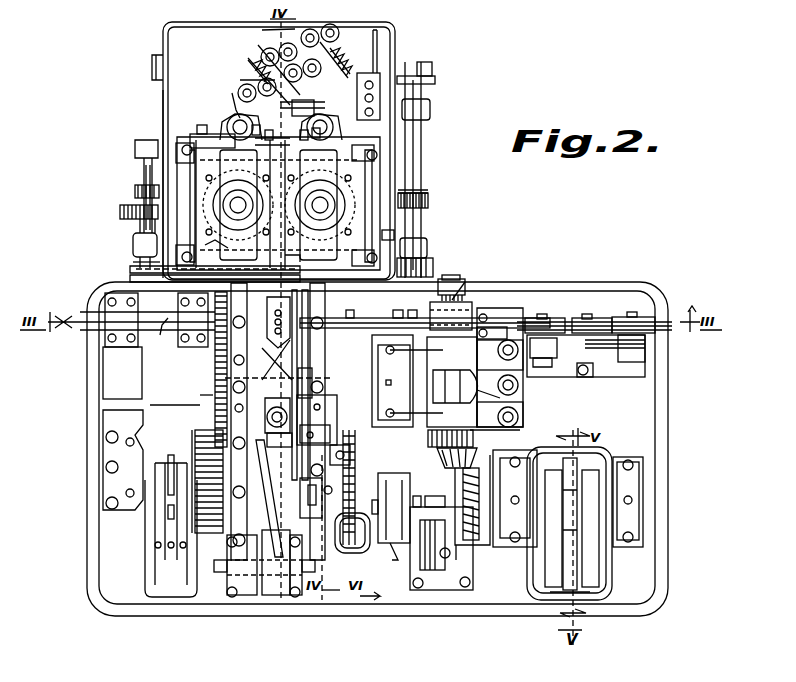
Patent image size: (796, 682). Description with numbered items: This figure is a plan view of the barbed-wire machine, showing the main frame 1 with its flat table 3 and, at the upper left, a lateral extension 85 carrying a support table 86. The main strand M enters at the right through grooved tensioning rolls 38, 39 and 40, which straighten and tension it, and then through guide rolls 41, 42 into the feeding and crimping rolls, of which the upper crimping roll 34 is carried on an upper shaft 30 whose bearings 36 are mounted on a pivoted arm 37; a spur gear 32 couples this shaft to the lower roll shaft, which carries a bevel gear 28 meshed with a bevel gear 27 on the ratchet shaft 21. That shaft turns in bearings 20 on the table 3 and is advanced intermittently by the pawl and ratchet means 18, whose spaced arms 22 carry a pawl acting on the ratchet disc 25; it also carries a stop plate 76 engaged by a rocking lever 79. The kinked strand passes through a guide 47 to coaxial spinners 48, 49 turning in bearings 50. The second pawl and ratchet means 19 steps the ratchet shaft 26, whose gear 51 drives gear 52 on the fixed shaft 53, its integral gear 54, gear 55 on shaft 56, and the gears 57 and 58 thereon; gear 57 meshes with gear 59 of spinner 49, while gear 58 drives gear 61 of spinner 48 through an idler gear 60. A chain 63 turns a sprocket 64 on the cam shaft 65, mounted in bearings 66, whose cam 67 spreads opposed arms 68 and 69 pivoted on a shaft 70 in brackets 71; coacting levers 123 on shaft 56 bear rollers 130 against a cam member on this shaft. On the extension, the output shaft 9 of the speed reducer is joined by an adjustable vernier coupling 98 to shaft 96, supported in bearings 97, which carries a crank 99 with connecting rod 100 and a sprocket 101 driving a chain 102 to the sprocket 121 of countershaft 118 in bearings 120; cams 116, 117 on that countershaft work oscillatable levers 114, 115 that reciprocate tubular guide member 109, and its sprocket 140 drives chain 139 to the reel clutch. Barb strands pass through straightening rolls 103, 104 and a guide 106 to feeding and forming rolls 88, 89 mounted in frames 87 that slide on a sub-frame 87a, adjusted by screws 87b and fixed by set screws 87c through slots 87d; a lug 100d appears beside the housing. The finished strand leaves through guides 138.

The main frame 1 is at (72, 551).
The flat top or table 3 is at (106, 580).
The output shaft 9 is at (435, 266).
The pawl and ratchet means 18 is at (601, 577).
The pawl and ratchet means 19 is at (156, 544).
The bearings 20 is at (537, 555).
The shaft 21 is at (578, 468).
The spaced arms 22 is at (548, 594).
The ratchet disc 25 is at (590, 447).
The ratchet shaft 26 is at (110, 488).
The bevel gear 27 is at (462, 545).
The bevel gear 28 is at (475, 436).
The upper shaft 30 is at (442, 400).
The spur gear 32 is at (520, 425).
The feeding and crimping roll 34 is at (455, 300).
The bearings 36 is at (392, 381).
The pivoted arm 37 is at (522, 400).
The grooved tensioning roll 38 is at (630, 317).
The grooved tensioning roll 39 is at (585, 318).
The grooved tensioning roll 40 is at (545, 318).
The guide roll 41 is at (532, 320).
The guide roll 42 is at (462, 348).
The guide 47 is at (400, 314).
The spinner 48 is at (381, 307).
The spinner 49 is at (252, 421).
The bearings 50 is at (208, 372).
The gear 51 is at (211, 547).
The gear 52 is at (215, 425).
The fixed shaft 53 is at (172, 396).
The gear 54 is at (195, 442).
The gear 55 is at (222, 400).
The shaft 56 is at (212, 400).
The gear 57 is at (213, 390).
The gear 58 is at (420, 380).
The gear 59 is at (260, 352).
The idler gear 60 is at (375, 360).
The gear 61 is at (372, 350).
The chain 63 is at (352, 543).
The sprocket 64 is at (336, 487).
The cam shaft 65 is at (455, 496).
The bearings 66 is at (330, 470).
The cam 67 is at (273, 418).
The arm 68 is at (268, 520).
The arm 69 is at (262, 590).
The shaft 70 is at (270, 600).
The brackets 71 is at (228, 580).
The stop plate 76 is at (410, 568).
The rocking lever 79 is at (395, 538).
The lateral extension 85 is at (156, 104).
The support or table 86 is at (279, 151).
The frames 87 is at (264, 205).
The sub-frame 87a is at (224, 103).
The screws 87b is at (396, 233).
The set screws 87c is at (226, 120).
The slots 87d is at (198, 130).
The feeding and forming roll 88 is at (320, 205).
The feeding and forming roll 89 is at (225, 243).
The shaft 96 is at (421, 152).
The bearings 97 is at (432, 108).
The adjustable vernier coupling 98 is at (455, 322).
The crank 99 is at (436, 80).
The connecting rod 100 is at (420, 66).
The lug 100d is at (154, 68).
The sprocket 101 is at (430, 202).
The chain 102 is at (430, 188).
The straightening and tensioning rolls 103 is at (132, 181).
The straightening and tensioning rolls 104 is at (265, 42).
The guide 106 is at (302, 99).
The reciprocal tubular guide member 109 is at (310, 257).
The oscillatable lever 114 is at (147, 319).
The oscillatable lever 115 is at (128, 280).
The cam 116 is at (128, 262).
The cam 117 is at (128, 273).
The countershaft 118 is at (144, 167).
The bearings 120 is at (135, 148).
The sprocket 121 is at (135, 192).
The lever 123 is at (277, 385).
The rollers 130 is at (302, 498).
The guides 138 is at (157, 335).
The chain 139 is at (120, 211).
The sprocket 140 is at (135, 225).
The main strand M is at (500, 364).